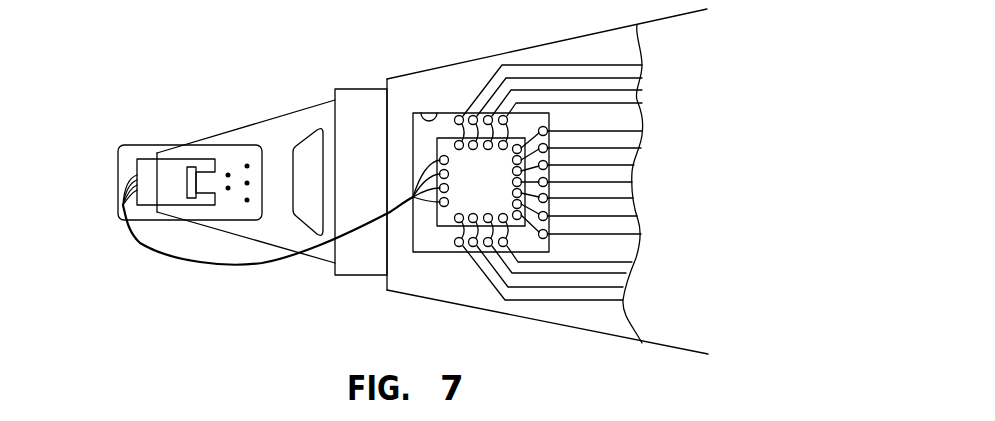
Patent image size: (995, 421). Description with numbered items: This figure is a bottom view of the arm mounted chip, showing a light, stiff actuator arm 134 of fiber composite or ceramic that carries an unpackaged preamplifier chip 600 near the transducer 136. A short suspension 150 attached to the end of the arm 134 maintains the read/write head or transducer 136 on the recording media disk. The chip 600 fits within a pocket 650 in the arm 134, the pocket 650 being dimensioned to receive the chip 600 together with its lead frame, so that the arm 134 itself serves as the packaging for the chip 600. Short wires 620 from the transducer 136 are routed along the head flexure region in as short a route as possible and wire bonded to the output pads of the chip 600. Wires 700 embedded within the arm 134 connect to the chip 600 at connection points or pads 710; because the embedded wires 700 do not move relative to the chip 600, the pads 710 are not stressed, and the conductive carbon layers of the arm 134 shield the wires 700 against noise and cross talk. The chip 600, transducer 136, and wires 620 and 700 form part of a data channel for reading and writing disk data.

The actuator arm 134 is at (697, 194).
The transducer 136 is at (118, 173).
The suspension 150 is at (258, 132).
The preamplifier chip 600 is at (462, 195).
The wires 620 is at (213, 265).
The pocket 650 is at (423, 112).
The wires 700 is at (612, 130).
The pads 710 is at (445, 220).